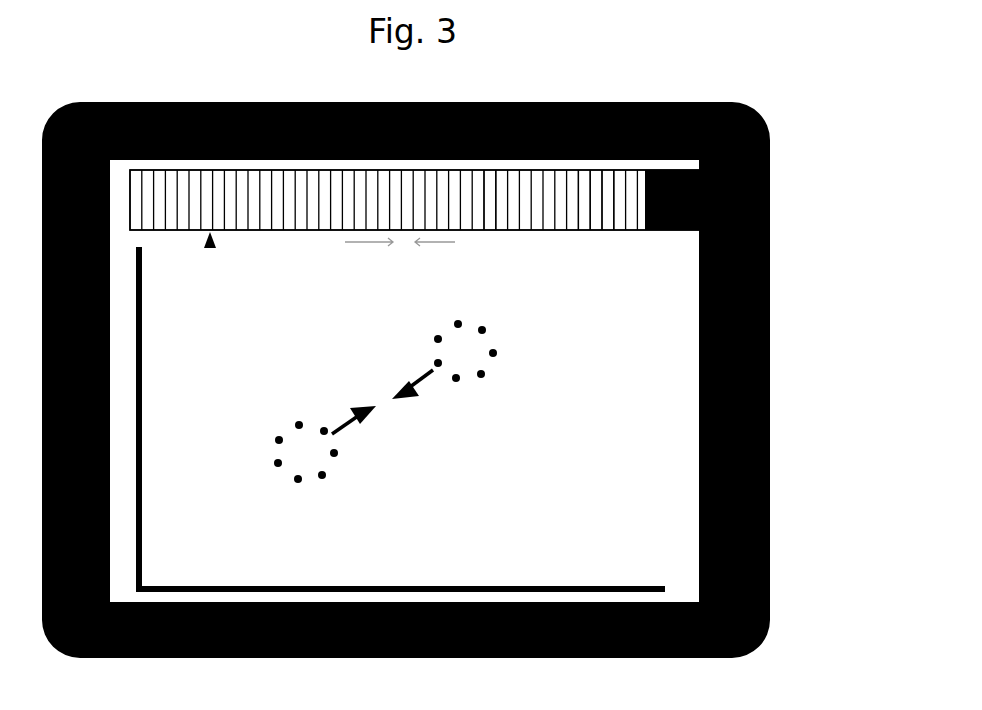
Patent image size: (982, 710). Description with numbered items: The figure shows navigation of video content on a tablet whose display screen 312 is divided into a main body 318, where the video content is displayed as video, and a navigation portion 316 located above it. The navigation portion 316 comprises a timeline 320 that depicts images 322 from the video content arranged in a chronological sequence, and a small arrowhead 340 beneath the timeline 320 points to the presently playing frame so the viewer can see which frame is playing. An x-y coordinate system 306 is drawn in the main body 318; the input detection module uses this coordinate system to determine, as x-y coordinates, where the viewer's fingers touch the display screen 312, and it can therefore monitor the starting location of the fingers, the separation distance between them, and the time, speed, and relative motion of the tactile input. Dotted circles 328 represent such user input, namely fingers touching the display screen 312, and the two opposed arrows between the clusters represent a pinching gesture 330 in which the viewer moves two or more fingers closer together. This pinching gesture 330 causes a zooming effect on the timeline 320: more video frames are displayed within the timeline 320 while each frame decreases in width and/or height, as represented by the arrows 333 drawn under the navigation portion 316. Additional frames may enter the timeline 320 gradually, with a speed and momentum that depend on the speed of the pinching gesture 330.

The x-y coordinate system 306 is at (160, 583).
The display screen 312 is at (771, 393).
The navigation portion 316 is at (335, 242).
The main body 318 is at (549, 408).
The timeline 320 is at (493, 232).
The images 322 is at (610, 215).
The dotted circles 328 is at (300, 442).
The pinching gesture 330 is at (382, 402).
The arrows 333 is at (400, 254).
The small arrowhead 340 is at (218, 244).